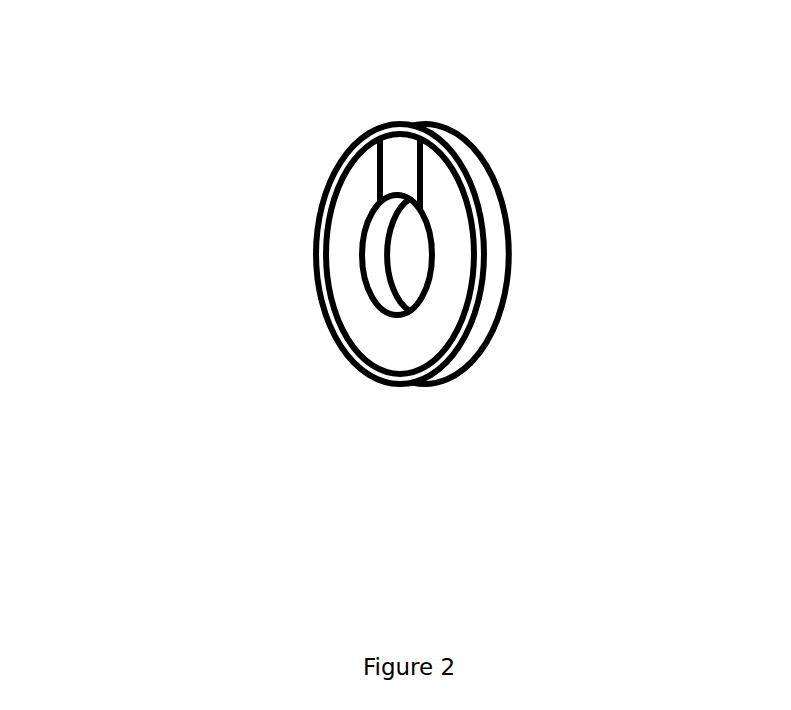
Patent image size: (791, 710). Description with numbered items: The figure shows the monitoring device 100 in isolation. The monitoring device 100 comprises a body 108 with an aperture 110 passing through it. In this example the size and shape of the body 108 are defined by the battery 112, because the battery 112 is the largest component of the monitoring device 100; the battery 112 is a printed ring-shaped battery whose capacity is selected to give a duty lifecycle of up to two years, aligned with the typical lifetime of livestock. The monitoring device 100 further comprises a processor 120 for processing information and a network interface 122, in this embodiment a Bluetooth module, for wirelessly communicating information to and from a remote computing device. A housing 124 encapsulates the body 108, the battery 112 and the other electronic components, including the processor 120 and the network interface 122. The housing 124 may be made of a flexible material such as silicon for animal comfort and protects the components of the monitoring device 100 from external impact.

The monitoring device 100 is at (407, 108).
The body 108 is at (482, 329).
The aperture 110 is at (407, 248).
The battery 112 is at (345, 248).
The processor 120 is at (405, 168).
The network interface 122 is at (392, 168).
The housing 124 is at (343, 329).